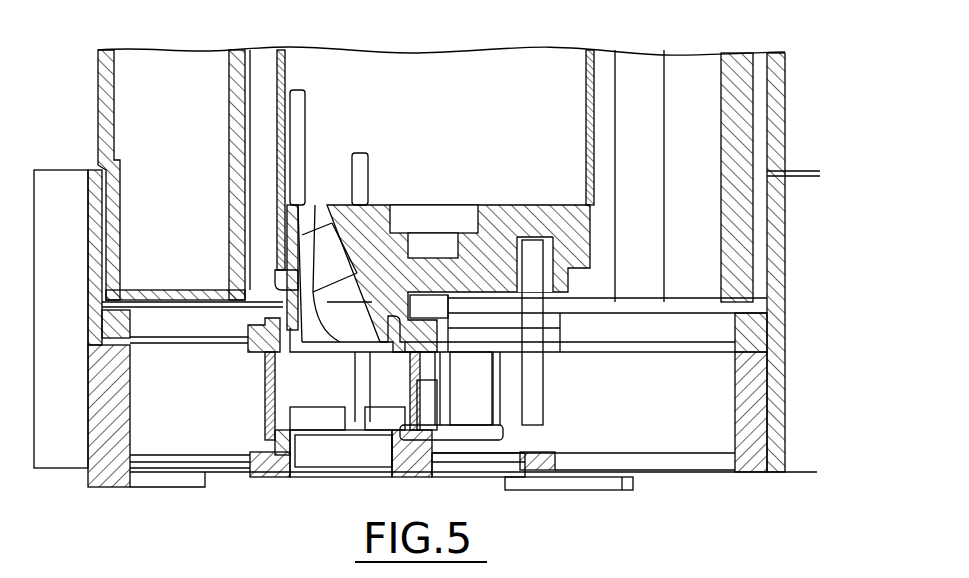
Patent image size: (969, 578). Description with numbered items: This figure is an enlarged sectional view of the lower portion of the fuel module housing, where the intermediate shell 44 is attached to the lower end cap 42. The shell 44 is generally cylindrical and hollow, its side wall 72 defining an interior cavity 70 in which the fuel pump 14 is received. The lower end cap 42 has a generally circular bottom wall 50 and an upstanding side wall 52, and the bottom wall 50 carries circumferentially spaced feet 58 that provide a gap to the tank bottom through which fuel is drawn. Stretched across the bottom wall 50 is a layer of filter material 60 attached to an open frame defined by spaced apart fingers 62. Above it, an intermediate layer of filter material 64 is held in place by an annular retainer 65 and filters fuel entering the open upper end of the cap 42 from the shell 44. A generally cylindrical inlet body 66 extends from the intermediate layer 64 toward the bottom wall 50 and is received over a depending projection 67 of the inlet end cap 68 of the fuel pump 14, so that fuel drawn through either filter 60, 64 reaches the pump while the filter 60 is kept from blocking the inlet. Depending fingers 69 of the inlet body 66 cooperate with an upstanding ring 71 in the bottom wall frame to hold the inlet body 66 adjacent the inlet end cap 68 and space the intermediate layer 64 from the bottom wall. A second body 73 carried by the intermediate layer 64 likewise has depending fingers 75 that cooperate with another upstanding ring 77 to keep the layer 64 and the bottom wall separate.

The fuel pump 14 is at (276, 140).
The lower end cap 42 is at (790, 305).
The intermediate shell 44 is at (97, 113).
The bottom wall 50 is at (238, 482).
The side wall 52 is at (783, 373).
The feet 58 is at (118, 490).
The layer of filter material 60 is at (680, 474).
The fingers 62 is at (552, 474).
The intermediate layer of filter material 64 is at (633, 344).
The annular retainer 65 is at (757, 333).
The inlet body 66 is at (247, 333).
The depending projection 67 is at (300, 345).
The inlet end cap 68 is at (283, 248).
The depending fingers 69 is at (265, 418).
The interior cavity 70 is at (270, 73).
The upstanding ring 71 is at (283, 438).
The side wall 72 is at (98, 75).
The second body 73 is at (566, 330).
The depending fingers 75 is at (480, 378).
The upstanding ring 77 is at (505, 441).